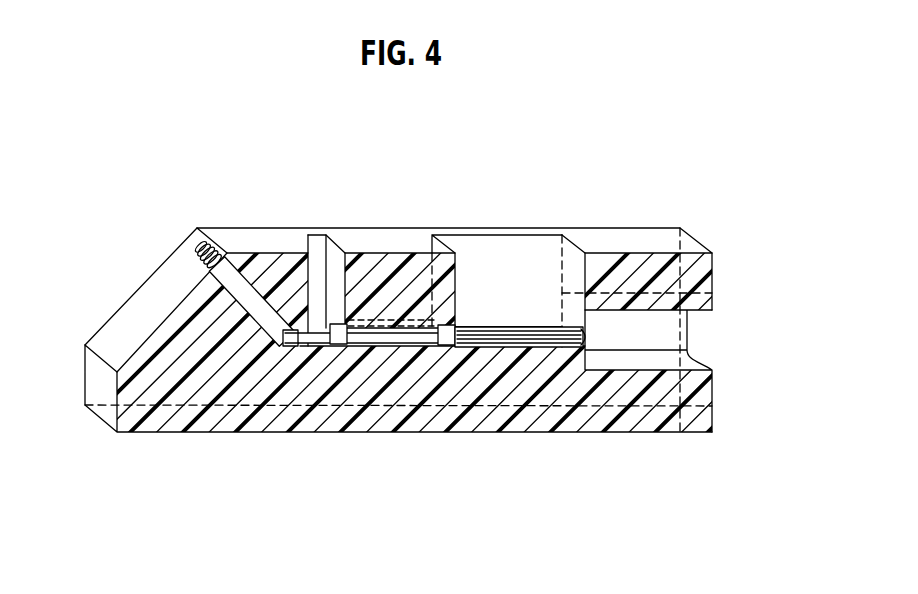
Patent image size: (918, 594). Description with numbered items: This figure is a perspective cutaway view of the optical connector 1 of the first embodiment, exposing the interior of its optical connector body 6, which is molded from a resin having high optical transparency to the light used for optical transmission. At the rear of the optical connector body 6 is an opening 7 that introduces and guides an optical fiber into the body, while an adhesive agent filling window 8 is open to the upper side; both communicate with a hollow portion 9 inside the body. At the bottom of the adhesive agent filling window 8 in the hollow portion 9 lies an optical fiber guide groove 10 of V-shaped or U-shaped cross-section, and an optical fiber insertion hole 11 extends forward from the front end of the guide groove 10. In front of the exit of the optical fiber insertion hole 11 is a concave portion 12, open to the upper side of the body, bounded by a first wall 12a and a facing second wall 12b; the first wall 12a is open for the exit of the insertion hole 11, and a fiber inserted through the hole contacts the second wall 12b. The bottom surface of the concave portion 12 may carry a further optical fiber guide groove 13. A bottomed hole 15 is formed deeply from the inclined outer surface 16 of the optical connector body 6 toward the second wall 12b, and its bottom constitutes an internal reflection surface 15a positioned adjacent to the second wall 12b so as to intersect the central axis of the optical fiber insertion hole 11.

The optical connector 1 is at (595, 157).
The optical connector body 6 is at (388, 238).
The opening 7 is at (670, 330).
The adhesive agent filling window 8 is at (540, 247).
The hollow portion 9 is at (482, 295).
The optical fiber guide groove 10 is at (508, 347).
The optical fiber insertion hole 11 is at (408, 346).
The concave portion 12 is at (323, 238).
The first wall 12a is at (338, 258).
The second wall 12b is at (308, 248).
The optical fiber guide groove 13 is at (328, 346).
The bottomed hole 15 is at (198, 250).
The internal reflection surface 15a is at (297, 347).
The inclined outer surface 16 is at (122, 322).